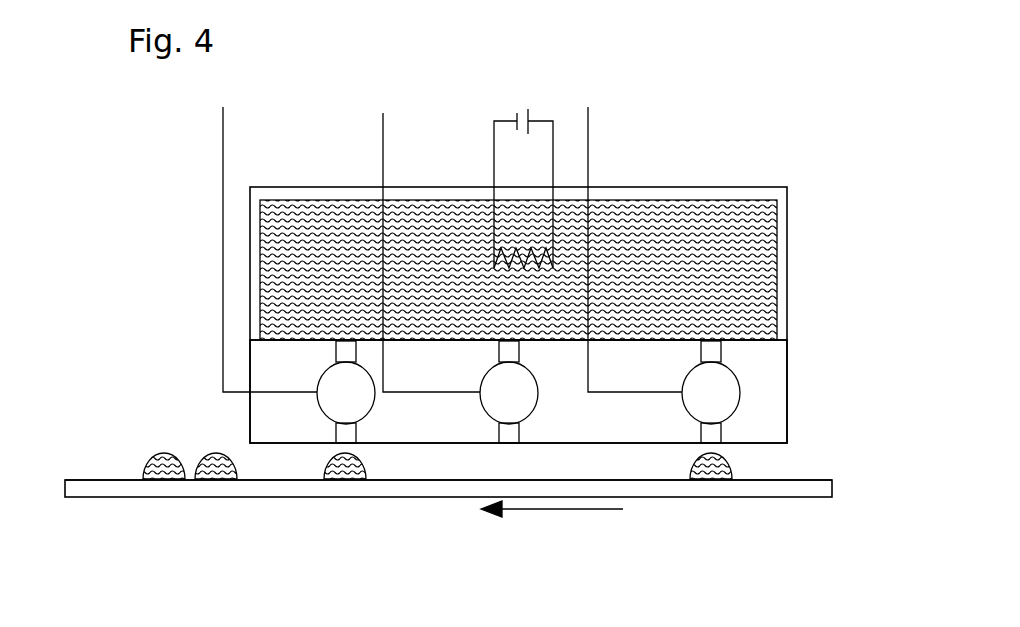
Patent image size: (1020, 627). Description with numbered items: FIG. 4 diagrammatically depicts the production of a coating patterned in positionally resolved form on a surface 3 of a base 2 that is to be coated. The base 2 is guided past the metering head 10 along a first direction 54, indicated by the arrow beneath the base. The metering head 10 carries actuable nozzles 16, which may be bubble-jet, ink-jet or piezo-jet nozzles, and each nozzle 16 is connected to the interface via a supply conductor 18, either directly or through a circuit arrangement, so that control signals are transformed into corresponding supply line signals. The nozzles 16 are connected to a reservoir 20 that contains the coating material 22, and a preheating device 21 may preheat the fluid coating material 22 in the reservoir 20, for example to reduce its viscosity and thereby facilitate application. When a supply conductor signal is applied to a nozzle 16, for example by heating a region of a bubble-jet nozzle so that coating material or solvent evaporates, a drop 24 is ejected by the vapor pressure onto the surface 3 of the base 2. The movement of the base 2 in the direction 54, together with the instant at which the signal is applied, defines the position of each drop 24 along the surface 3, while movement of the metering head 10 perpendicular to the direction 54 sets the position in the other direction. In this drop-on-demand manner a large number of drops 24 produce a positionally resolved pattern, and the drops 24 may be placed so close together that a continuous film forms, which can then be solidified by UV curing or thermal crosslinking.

The base 2 is at (315, 498).
The surface 3 is at (92, 479).
The metering head 10 is at (787, 367).
The nozzles 16 is at (330, 368).
The supply conductors 18 is at (223, 172).
The reservoir 20 is at (787, 257).
The preheating device 21 is at (494, 121).
The coating material 22 is at (730, 233).
The drop 24 is at (207, 454).
The first direction 54 is at (558, 511).